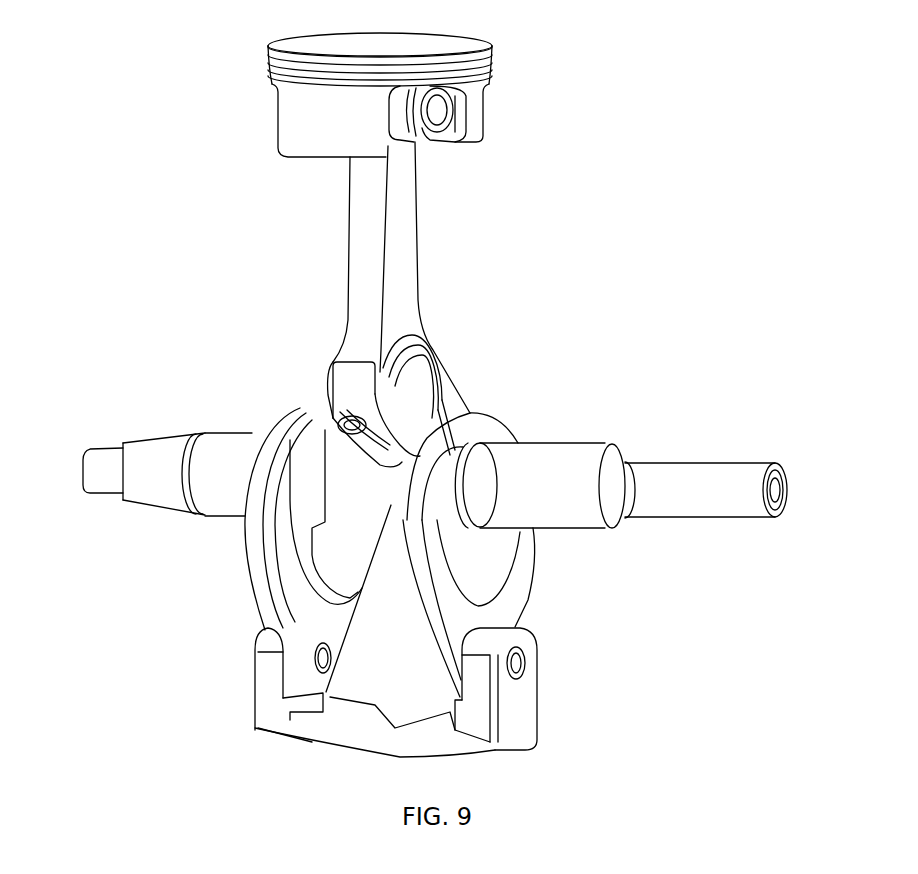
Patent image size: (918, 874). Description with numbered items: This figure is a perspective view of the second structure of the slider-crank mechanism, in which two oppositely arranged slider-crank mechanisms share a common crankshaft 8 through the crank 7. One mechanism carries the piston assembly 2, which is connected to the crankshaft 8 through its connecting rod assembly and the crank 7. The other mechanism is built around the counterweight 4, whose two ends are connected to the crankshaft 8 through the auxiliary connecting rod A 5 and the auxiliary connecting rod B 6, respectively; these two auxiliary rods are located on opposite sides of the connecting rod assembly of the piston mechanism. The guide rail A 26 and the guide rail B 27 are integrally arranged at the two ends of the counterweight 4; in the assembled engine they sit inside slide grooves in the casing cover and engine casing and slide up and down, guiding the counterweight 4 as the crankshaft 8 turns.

The piston assembly 2 is at (384, 217).
The counterweight 4 is at (317, 740).
The auxiliary connecting rod A 5 is at (303, 628).
The auxiliary connecting rod B 6 is at (503, 608).
The crank 7 is at (428, 380).
The crankshaft 8 is at (578, 483).
The guide rail A 26 is at (270, 672).
The guide rail B 27 is at (503, 690).